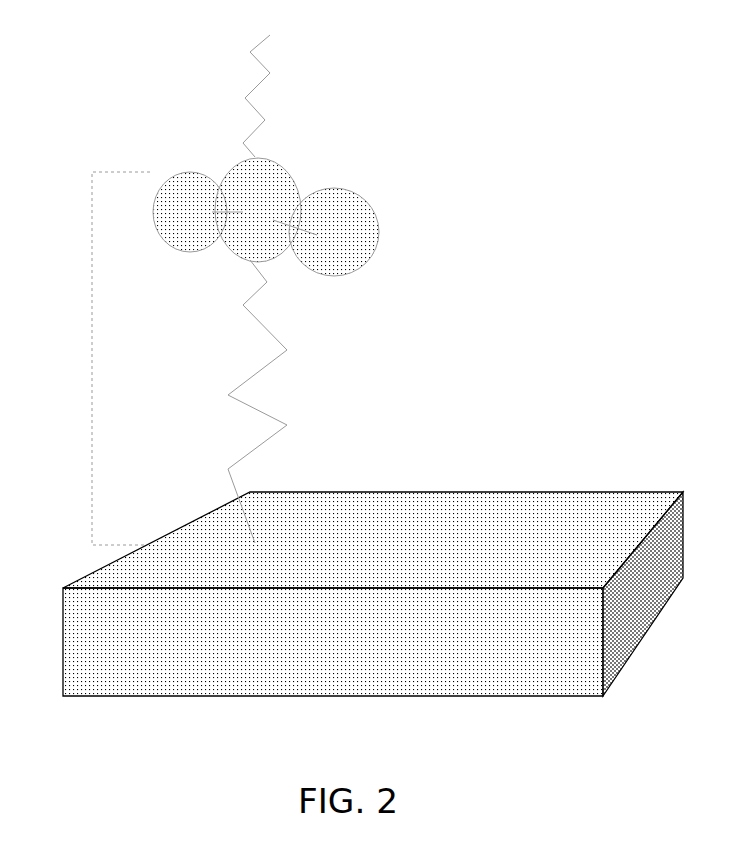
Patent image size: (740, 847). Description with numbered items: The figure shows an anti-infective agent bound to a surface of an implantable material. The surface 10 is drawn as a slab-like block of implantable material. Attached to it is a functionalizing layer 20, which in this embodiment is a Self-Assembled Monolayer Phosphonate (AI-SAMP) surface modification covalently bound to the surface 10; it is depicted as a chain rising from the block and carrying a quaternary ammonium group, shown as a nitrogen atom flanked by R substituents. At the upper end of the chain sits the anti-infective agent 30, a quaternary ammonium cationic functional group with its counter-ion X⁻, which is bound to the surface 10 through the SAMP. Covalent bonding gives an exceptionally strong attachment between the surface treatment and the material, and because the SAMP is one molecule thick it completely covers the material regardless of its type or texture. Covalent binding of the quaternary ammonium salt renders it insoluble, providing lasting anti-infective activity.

The surface 10 is at (543, 528).
The functionalizing layer 20 is at (92, 335).
The anti-infective agent 30 is at (242, 50).